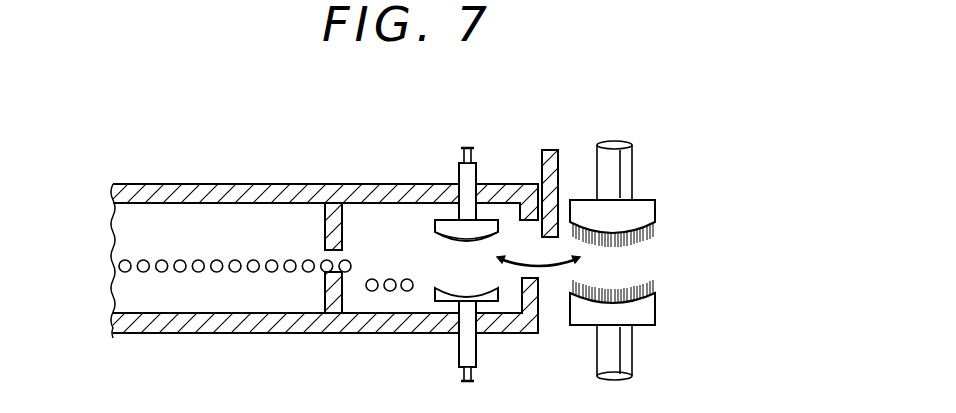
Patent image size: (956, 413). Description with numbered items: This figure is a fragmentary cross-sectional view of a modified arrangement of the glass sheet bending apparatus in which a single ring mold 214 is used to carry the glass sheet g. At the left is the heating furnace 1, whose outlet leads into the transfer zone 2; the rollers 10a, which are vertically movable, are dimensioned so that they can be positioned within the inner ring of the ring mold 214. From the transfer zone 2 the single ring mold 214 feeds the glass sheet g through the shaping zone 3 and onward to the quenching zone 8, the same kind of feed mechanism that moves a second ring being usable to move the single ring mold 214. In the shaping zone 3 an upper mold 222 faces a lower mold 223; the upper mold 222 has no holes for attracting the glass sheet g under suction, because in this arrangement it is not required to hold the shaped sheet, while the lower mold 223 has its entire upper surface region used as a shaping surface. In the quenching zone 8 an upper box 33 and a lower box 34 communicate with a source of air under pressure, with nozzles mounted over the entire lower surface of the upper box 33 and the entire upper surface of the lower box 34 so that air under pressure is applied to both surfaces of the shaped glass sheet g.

The heating furnace 1 is at (181, 188).
The transfer zone 2 is at (373, 236).
The shaping zone 3 is at (474, 256).
The quenching zone 8 is at (678, 256).
The rollers 10a is at (368, 292).
The upper box 33 is at (657, 208).
The lower box 34 is at (648, 314).
The single ring mold 214 is at (534, 327).
The upper mold 222 is at (457, 222).
The lower mold 223 is at (455, 302).
The glass sheet g is at (562, 268).